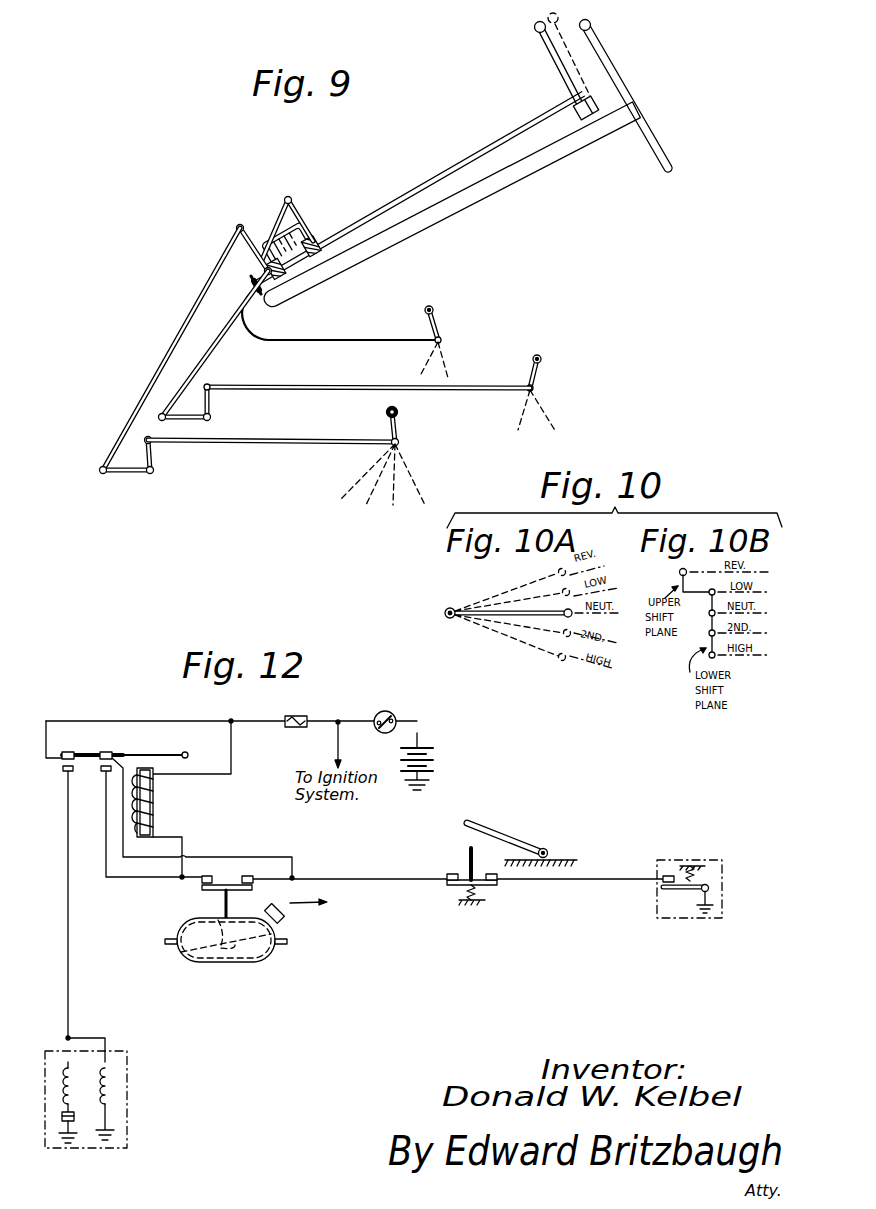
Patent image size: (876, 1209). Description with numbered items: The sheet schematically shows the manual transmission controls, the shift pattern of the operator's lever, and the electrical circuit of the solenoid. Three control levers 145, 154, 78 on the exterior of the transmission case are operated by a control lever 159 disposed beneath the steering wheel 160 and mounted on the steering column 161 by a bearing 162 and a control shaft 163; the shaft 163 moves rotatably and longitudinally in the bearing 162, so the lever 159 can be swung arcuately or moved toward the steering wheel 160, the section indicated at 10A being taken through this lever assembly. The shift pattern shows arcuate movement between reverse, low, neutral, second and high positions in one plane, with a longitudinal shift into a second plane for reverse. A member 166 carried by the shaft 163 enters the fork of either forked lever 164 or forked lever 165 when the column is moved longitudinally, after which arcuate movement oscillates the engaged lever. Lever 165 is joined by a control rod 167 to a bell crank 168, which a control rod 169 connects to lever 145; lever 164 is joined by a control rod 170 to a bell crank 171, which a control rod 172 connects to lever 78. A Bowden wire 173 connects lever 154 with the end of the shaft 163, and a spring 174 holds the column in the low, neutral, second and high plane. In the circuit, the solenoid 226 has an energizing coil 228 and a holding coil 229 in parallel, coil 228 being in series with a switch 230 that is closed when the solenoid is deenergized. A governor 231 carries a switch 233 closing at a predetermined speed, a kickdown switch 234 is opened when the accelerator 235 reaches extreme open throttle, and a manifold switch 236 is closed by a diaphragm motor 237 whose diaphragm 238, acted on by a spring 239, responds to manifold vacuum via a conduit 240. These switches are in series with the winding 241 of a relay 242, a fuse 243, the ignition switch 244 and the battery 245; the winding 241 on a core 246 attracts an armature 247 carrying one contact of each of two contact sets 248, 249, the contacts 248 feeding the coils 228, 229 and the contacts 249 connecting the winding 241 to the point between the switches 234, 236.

In FIG. 9, the section line 10A- 10A is at (577, 33).
In FIG. 9, the control lever 159 is at (560, 63).
In FIG. 10A, the control lever 159 is at (508, 612).
In FIG. 9, the steering wheel 160 is at (668, 158).
In FIG. 9, the steering column 161 is at (527, 156).
In FIG. 9, the bearing 162 is at (590, 122).
In FIG. 9, the control shaft 163 is at (447, 177).
In FIG. 9, the forked lever 164 is at (296, 203).
In FIG. 9, the forked lever 165 is at (250, 235).
In FIG. 9, the member 166 is at (306, 270).
In FIG. 9, the control rod 167 is at (199, 300).
In FIG. 9, the bell crank 168 is at (119, 477).
In FIG. 9, the control rod 169 is at (259, 449).
In FIG. 9, the control rod 170 is at (208, 360).
In FIG. 9, the bell crank 171 is at (210, 403).
In FIG. 9, the control rod 172 is at (305, 386).
In FIG. 9, the Bowden wire 173 is at (333, 340).
In FIG. 9, the spring 174 is at (262, 294).
In FIG. 9, the control lever 145 is at (385, 412).
In FIG. 9, the control lever 154 is at (437, 321).
In FIG. 9, the control lever 78 is at (531, 372).
In FIG. 12, the solenoid 226 is at (127, 1130).
In FIG. 12, the energizing coil 228 is at (60, 1078).
In FIG. 12, the holding coil 229 is at (112, 1072).
In FIG. 12, the switch 230 is at (60, 1117).
In FIG. 12, the governor 231 is at (725, 866).
In FIG. 12, the switch 233 is at (660, 884).
In FIG. 12, the kickdown switch 234 is at (463, 875).
In FIG. 12, the accelerator 235 is at (470, 823).
In FIG. 12, the manifold switch 236 is at (200, 884).
In FIG. 12, the diaphragm motor 237 is at (276, 955).
In FIG. 12, the diaphragm 238 is at (178, 948).
In FIG. 12, the spring 239 is at (215, 926).
In FIG. 12, the conduit 240 is at (287, 918).
In FIG. 12, the winding 241 is at (154, 806).
In FIG. 12, the relay 242 is at (135, 750).
In FIG. 12, the fuse 243 is at (291, 728).
In FIG. 12, the ignition switch 244 is at (398, 714).
In FIG. 12, the battery 245 is at (436, 755).
In FIG. 12, the core 246 is at (154, 820).
In FIG. 12, the armature 247 is at (167, 754).
In FIG. 12, the contacts 248 is at (60, 766).
In FIG. 12, the contacts 249 is at (99, 768).